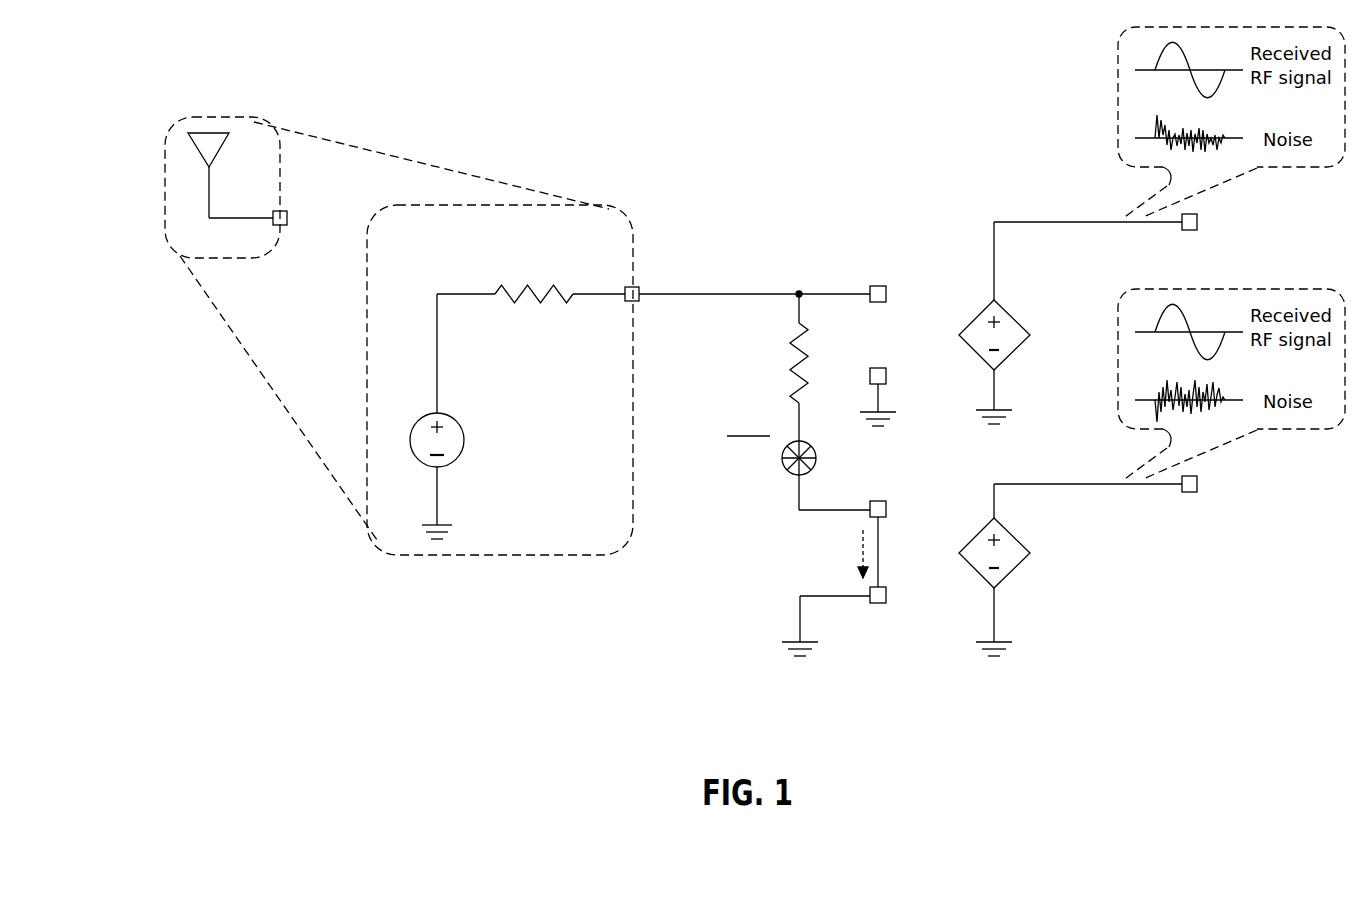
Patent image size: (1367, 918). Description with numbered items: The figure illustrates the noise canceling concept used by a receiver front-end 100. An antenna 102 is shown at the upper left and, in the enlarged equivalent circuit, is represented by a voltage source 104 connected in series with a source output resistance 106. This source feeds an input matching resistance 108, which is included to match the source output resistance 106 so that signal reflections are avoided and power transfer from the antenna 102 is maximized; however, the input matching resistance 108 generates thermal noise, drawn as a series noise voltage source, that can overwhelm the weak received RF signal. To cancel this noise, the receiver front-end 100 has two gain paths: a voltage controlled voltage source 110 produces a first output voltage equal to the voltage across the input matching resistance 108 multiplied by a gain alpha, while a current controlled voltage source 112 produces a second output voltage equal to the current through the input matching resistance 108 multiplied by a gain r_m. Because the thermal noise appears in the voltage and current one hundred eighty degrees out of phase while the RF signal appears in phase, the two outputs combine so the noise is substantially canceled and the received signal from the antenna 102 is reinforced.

The receiver front-end 100 is at (397, 672).
The antenna 102 is at (218, 148).
The voltage source 104 is at (465, 441).
The source output resistance 106 is at (538, 266).
The input matching resistance 108 is at (806, 475).
The voltage controlled voltage source 110 is at (1005, 308).
The current controlled voltage source 112 is at (1005, 582).